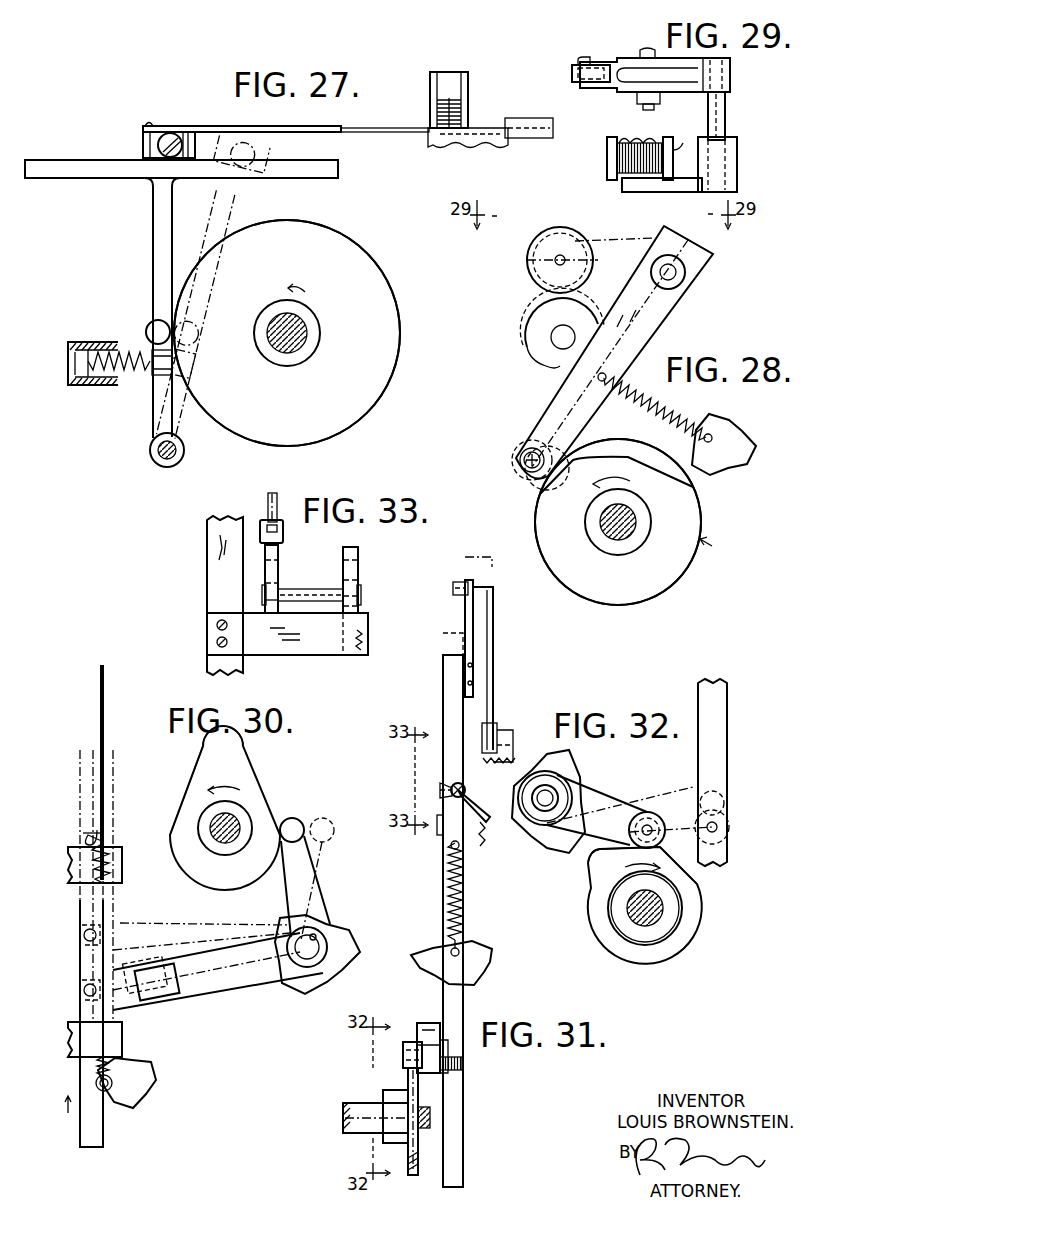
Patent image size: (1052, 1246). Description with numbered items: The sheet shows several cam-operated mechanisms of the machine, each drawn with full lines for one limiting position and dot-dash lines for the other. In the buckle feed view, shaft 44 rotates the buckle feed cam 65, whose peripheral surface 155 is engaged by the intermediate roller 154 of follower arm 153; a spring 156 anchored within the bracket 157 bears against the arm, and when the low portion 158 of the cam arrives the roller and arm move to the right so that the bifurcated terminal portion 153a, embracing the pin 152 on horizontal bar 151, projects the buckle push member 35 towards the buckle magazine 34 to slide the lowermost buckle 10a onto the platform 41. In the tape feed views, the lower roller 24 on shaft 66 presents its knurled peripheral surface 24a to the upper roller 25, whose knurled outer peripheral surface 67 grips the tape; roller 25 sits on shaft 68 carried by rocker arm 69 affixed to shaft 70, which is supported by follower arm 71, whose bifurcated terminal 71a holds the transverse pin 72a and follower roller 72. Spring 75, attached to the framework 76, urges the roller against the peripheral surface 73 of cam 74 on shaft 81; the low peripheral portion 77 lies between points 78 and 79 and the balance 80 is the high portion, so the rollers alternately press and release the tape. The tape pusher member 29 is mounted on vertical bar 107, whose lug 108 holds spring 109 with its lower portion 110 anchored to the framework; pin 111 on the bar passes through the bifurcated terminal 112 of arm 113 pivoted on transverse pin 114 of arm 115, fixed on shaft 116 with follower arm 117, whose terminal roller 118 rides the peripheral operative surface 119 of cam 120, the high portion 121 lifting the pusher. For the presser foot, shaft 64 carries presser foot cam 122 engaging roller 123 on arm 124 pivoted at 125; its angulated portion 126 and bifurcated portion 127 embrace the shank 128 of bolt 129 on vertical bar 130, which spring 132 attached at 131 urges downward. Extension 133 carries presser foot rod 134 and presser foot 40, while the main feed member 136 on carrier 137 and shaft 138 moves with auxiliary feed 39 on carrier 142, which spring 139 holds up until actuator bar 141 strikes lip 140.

In FIG. 27, the lowermost buckle 10a is at (457, 134).
In FIG. 29, the tape feeding roller 24 is at (657, 141).
In FIG. 28, the tape feeding roller 24 is at (528, 362).
In FIG. 29, the knurled peripheral surface 24a is at (673, 147).
In FIG. 28, the knurled peripheral surface 24a is at (531, 366).
In FIG. 29, the upper roller 25 is at (607, 155).
In FIG. 28, the upper roller 25 is at (560, 236).
In FIG. 30, the pusher member 29 is at (106, 735).
In FIG. 27, the buckle magazine 34 is at (430, 85).
In FIG. 27, the buckle push member 35 is at (416, 128).
In FIG. 33, the auxiliary sewing machine feed 39 is at (356, 556).
In FIG. 31, the auxiliary sewing machine feed 39 is at (482, 790).
In FIG. 33, the presser foot 40 is at (284, 534).
In FIG. 31, the presser foot 40 is at (511, 742).
In FIG. 27, the platform 41 is at (528, 139).
In FIG. 27, the shaft 44 is at (306, 333).
In FIG. 31, the shaft 64 is at (356, 1111).
In FIG. 32, the shaft 64 is at (664, 908).
In FIG. 27, the buckle feed cam 65 is at (394, 299).
In FIG. 28, the shaft 66 is at (560, 340).
In FIG. 29, the outer peripheral surface 67 is at (632, 160).
In FIG. 28, the outer peripheral surface 67 is at (530, 249).
In FIG. 28, the shaft 68 is at (574, 265).
In FIG. 29, the rocker arm 69 is at (732, 167).
In FIG. 28, the rocker arm 69 is at (630, 255).
In FIG. 29, the shaft 70 is at (720, 116).
In FIG. 28, the shaft 70 is at (680, 284).
In FIG. 29, the follower arm 71 is at (680, 88).
In FIG. 28, the follower arm 71 is at (656, 318).
In FIG. 29, the bifurcated terminal 71a is at (596, 90).
In FIG. 28, the bifurcated terminal 71a is at (519, 461).
In FIG. 29, the follower roller 72 is at (572, 74).
In FIG. 28, the follower roller 72 is at (513, 443).
In FIG. 29, the transverse pin 72a is at (578, 61).
In FIG. 28, the transverse pin 72a is at (528, 481).
In FIG. 28, the peripheral surface 73 is at (537, 536).
In FIG. 28, the cam 74 is at (717, 547).
In FIG. 28, the spring 75 is at (647, 406).
In FIG. 28, the framework 76 is at (742, 447).
In FIG. 30, the framework 76 is at (148, 1080).
In FIG. 31, the framework 76 is at (484, 956).
In FIG. 32, the framework 76 is at (548, 856).
In FIG. 28, the low peripheral portion 77 is at (670, 476).
In FIG. 28, the point 78 is at (558, 471).
In FIG. 28, the point 79 is at (690, 482).
In FIG. 28, the high portion 80 is at (673, 590).
In FIG. 29, the shaft 81 is at (641, 50).
In FIG. 28, the shaft 81 is at (614, 542).
In FIG. 30, the shaft 81 is at (226, 836).
In FIG. 30, the vertical bar 107 is at (88, 834).
In FIG. 30, the lug 108 is at (96, 830).
In FIG. 30, the spring 109 is at (119, 870).
In FIG. 30, the lower portion of spring 110 is at (116, 1068).
In FIG. 30, the pin 111 is at (86, 995).
In FIG. 30, the bifurcated terminal 112 is at (86, 977).
In FIG. 30, the arm 113 is at (169, 988).
In FIG. 30, the transverse pin 114 is at (150, 1005).
In FIG. 30, the arm 115 is at (243, 978).
In FIG. 30, the shaft 116 is at (311, 967).
In FIG. 30, the follower arm 117 is at (313, 893).
In FIG. 30, the terminal roller 118 is at (298, 824).
In FIG. 30, the peripheral operative surface 119 is at (266, 778).
In FIG. 30, the cam 120 is at (168, 803).
In FIG. 30, the high portion 121 is at (207, 744).
In FIG. 31, the presser foot cam 122 is at (413, 1172).
In FIG. 32, the presser foot cam 122 is at (694, 950).
In FIG. 31, the roller 123 is at (403, 1058).
In FIG. 32, the roller 123 is at (648, 821).
In FIG. 31, the arm 124 is at (445, 1045).
In FIG. 32, the arm 124 is at (601, 804).
In FIG. 31, the pivot 125 is at (428, 1023).
In FIG. 32, the pivot 125 is at (550, 797).
In FIG. 32, the angulated portion 126 is at (690, 856).
In FIG. 32, the bifurcated portion 127 is at (729, 840).
In FIG. 32, the shank 128 is at (733, 826).
In FIG. 31, the bolt 129 is at (459, 1072).
In FIG. 32, the bolt 129 is at (725, 808).
In FIG. 33, the vertical bar 130 is at (213, 550).
In FIG. 31, the vertical bar 130 is at (459, 1120).
In FIG. 32, the vertical bar 130 is at (720, 748).
In FIG. 31, the attachment point 131 is at (458, 848).
In FIG. 31, the spring 132 is at (461, 900).
In FIG. 31, the extension 133 is at (467, 614).
In FIG. 33, the presser foot rod 134 is at (268, 507).
In FIG. 31, the presser foot rod 134 is at (493, 649).
In FIG. 33, the main feed member 136 is at (278, 556).
In FIG. 33, the feed member carrier 137 is at (268, 607).
In FIG. 33, the shaft 138 is at (316, 582).
In FIG. 31, the shaft 138 is at (453, 784).
In FIG. 33, the spring 139 is at (365, 632).
In FIG. 31, the spring 139 is at (486, 826).
In FIG. 33, the lip 140 is at (358, 603).
In FIG. 31, the lip 140 is at (436, 797).
In FIG. 33, the actuator bar 141 is at (331, 646).
In FIG. 31, the actuator bar 141 is at (440, 832).
In FIG. 33, the auxiliary feed carrier 142 is at (358, 574).
In FIG. 31, the auxiliary feed carrier 142 is at (440, 790).
In FIG. 27, the horizontal bar 151 is at (302, 125).
In FIG. 27, the pin 152 is at (172, 133).
In FIG. 27, the follower arm 153 is at (156, 226).
In FIG. 27, the bifurcated terminal portion 153a is at (156, 125).
In FIG. 27, the intermediate roller 154 is at (150, 331).
In FIG. 27, the peripheral surface 155 is at (344, 427).
In FIG. 27, the spring 156 is at (137, 377).
In FIG. 27, the bracket 157 is at (68, 375).
In FIG. 27, the low portion of cam 158 is at (203, 295).